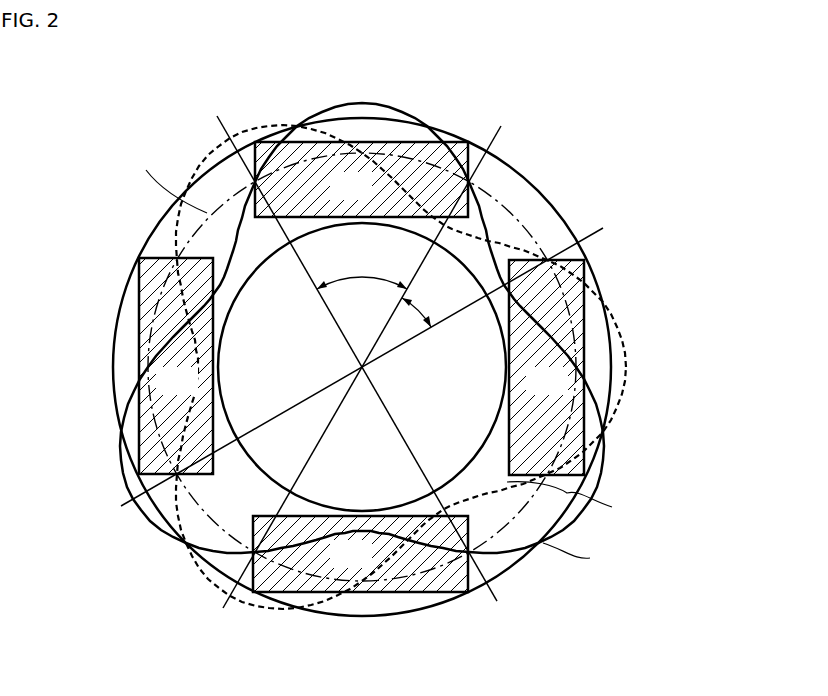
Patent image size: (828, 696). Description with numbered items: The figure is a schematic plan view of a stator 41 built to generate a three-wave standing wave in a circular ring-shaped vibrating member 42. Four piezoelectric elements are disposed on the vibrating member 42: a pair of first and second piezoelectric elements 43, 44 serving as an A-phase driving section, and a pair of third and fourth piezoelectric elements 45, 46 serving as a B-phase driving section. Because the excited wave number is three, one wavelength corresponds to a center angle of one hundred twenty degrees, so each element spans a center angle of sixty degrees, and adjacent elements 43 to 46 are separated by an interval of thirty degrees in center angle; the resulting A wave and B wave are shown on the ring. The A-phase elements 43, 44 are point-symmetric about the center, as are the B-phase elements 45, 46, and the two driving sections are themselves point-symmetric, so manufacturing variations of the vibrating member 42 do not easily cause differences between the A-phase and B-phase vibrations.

The stator 41 is at (178, 128).
The circular ring-shaped vibrating member 42 is at (342, 617).
The first piezoelectric element 43 is at (455, 142).
The second piezoelectric element 44 is at (420, 594).
The third piezoelectric element 45 is at (585, 332).
The fourth piezoelectric element 46 is at (139, 306).